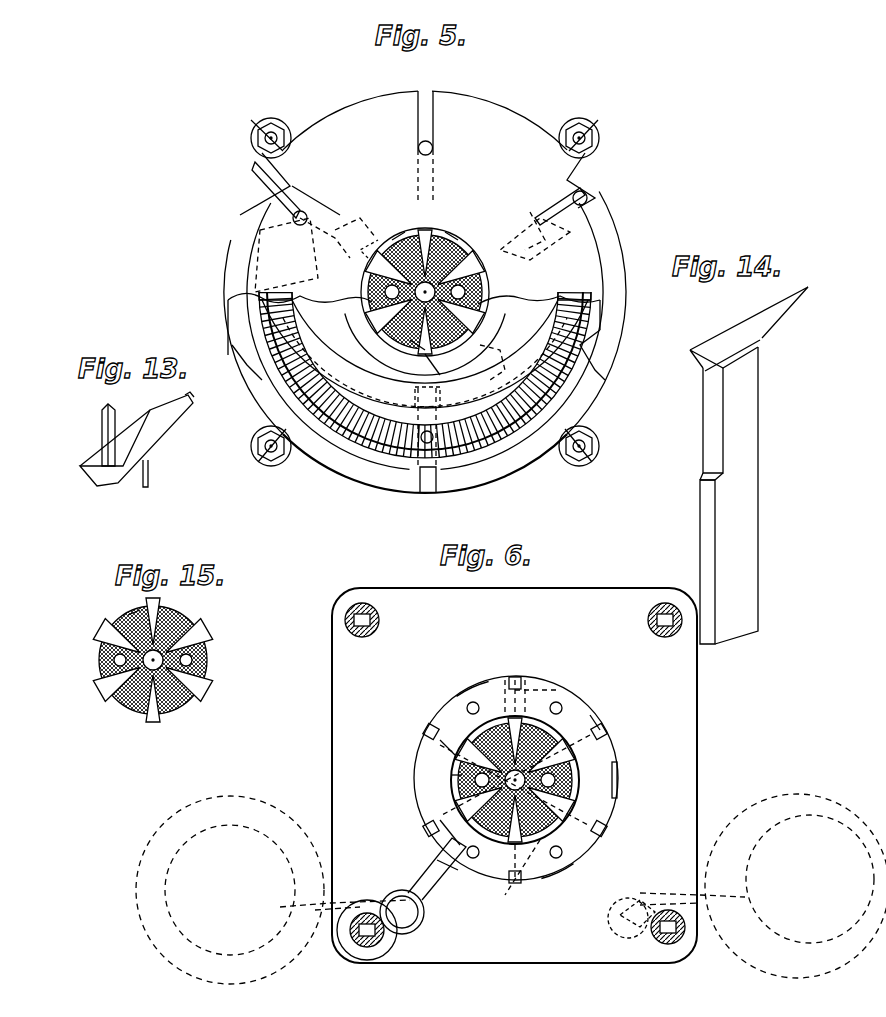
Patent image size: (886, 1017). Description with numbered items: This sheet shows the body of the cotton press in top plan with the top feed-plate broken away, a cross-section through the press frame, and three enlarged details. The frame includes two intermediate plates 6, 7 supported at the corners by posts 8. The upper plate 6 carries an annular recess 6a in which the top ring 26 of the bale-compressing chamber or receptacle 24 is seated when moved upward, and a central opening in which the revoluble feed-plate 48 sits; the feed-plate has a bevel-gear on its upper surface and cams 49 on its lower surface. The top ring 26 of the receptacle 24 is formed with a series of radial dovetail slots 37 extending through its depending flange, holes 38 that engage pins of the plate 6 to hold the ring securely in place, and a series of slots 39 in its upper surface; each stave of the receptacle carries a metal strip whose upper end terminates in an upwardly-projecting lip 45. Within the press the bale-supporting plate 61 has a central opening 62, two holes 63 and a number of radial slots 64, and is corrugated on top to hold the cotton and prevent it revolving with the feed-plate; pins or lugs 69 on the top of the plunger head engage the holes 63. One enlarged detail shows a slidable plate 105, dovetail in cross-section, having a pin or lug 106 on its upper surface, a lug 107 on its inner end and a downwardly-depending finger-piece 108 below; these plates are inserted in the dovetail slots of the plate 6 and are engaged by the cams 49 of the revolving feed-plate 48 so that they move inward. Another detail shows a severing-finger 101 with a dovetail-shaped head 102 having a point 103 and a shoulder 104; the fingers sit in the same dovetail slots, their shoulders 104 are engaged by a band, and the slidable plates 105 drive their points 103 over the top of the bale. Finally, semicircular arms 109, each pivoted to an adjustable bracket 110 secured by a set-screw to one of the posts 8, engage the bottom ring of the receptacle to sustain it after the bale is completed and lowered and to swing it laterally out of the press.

In FIG. 5, the intermediate plate 6 is at (232, 258).
In FIG. 5, the annular recess 6a is at (626, 382).
In FIG. 6, the intermediate plate 7 is at (332, 800).
In FIG. 6, the posts 8 is at (358, 637).
In FIG. 6, the bale-compressing chamber or receptacle 24 is at (140, 893).
In FIG. 5, the top ring 26 is at (490, 280).
In FIG. 6, the top ring 26 is at (590, 752).
In FIG. 6, the radial dovetail slots 37 is at (470, 690).
In FIG. 6, the holes 38 is at (466, 706).
In FIG. 6, the slots 39 is at (430, 830).
In FIG. 6, the upwardly-projecting lip 45 is at (452, 780).
In FIG. 5, the revoluble feed-plate 48 is at (268, 312).
In FIG. 5, the cams 49 is at (245, 292).
In FIG. 5, the bale-supporting plate 61 is at (455, 250).
In FIG. 15, the bale-supporting plate 61 is at (105, 657).
In FIG. 6, the bale-supporting plate 61 is at (580, 790).
In FIG. 5, the central opening 62 is at (398, 240).
In FIG. 15, the central opening 62 is at (190, 644).
In FIG. 5, the holes 63 is at (372, 270).
In FIG. 15, the holes 63 is at (205, 659).
In FIG. 6, the holes 63 is at (450, 800).
In FIG. 5, the radial slots 64 is at (440, 240).
In FIG. 15, the radial slots 64 is at (140, 610).
In FIG. 5, the pins or lugs 69 is at (350, 322).
In FIG. 6, the pins or lugs 69 is at (455, 760).
In FIG. 5, the severing-fingers 101 is at (385, 262).
In FIG. 14, the severing-fingers 101 is at (758, 482).
In FIG. 5, the dovetail-shaped head 102 is at (428, 345).
In FIG. 14, the dovetail-shaped head 102 is at (735, 360).
In FIG. 6, the dovetail-shaped head 102 is at (535, 712).
In FIG. 5, the point 103 is at (415, 335).
In FIG. 14, the point 103 is at (808, 290).
In FIG. 6, the point 103 is at (575, 740).
In FIG. 14, the shoulder 104 is at (703, 480).
In FIG. 6, the shoulder 104 is at (522, 690).
In FIG. 5, the slidable plates 105 is at (300, 215).
In FIG. 13, the slidable plates 105 is at (150, 445).
In FIG. 5, the pin or lug 106 is at (304, 212).
In FIG. 13, the pin or lug 106 is at (102, 432).
In FIG. 5, the lug 107 is at (330, 250).
In FIG. 13, the lug 107 is at (193, 400).
In FIG. 13, the finger-piece 108 is at (145, 488).
In FIG. 6, the semicircular arms 109 is at (338, 900).
In FIG. 6, the adjustable bracket 110 is at (290, 907).